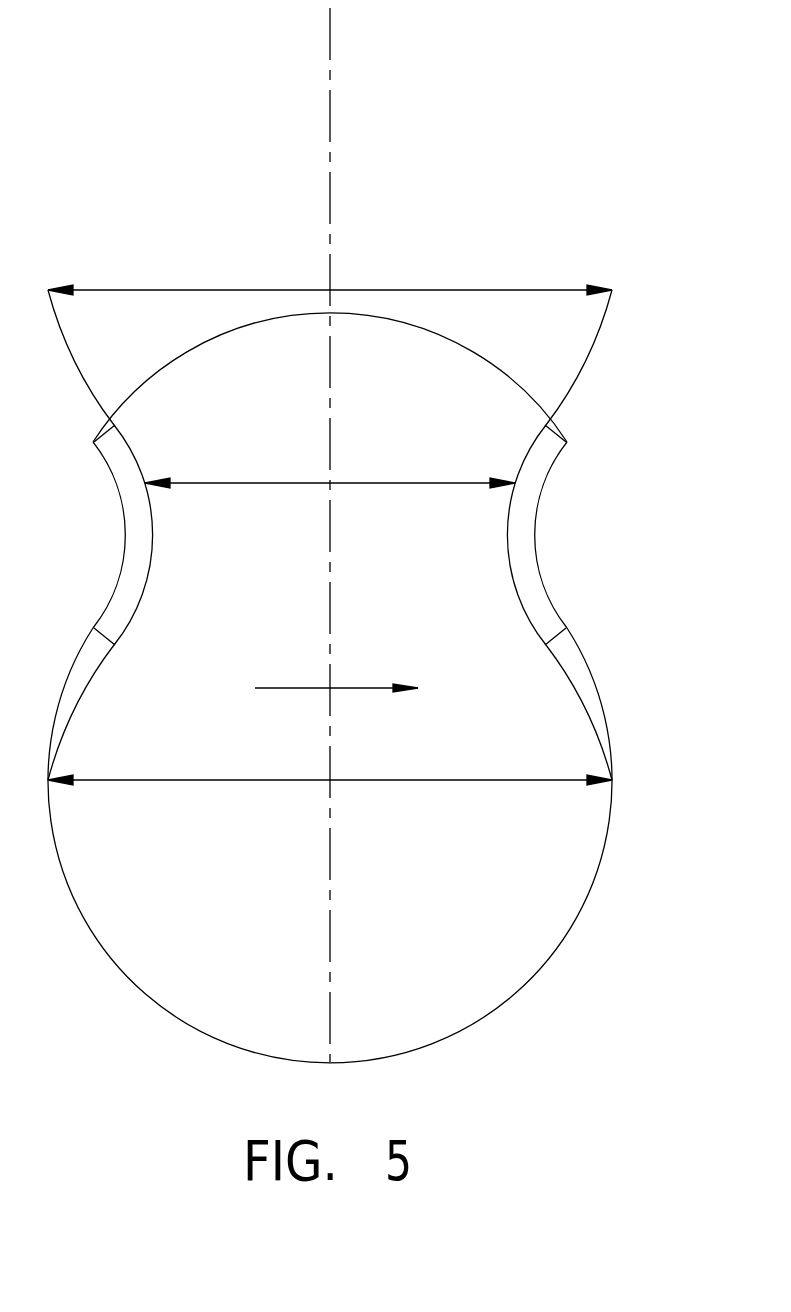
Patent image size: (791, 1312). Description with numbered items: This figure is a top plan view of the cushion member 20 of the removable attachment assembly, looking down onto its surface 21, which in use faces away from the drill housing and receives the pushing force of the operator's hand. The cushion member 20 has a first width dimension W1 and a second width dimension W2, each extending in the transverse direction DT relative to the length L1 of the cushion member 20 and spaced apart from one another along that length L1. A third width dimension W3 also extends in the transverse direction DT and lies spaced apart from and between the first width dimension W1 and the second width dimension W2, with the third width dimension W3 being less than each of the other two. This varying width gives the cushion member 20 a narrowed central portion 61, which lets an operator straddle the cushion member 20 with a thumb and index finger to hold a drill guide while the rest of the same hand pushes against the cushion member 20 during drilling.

The cushion member 20 is at (359, 548).
The surface 21 is at (467, 107).
The central portion 61 is at (483, 452).
The first width dimension W1 is at (330, 290).
The second width dimension W2 is at (330, 780).
The third width dimension W3 is at (330, 483).
The length L1 is at (328, 625).
The transverse direction DT is at (307, 690).